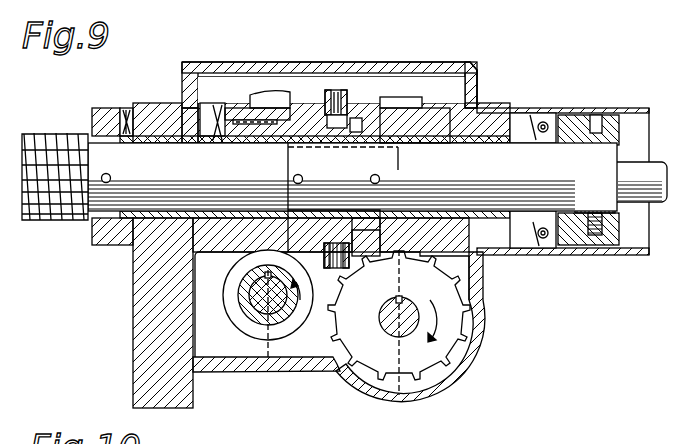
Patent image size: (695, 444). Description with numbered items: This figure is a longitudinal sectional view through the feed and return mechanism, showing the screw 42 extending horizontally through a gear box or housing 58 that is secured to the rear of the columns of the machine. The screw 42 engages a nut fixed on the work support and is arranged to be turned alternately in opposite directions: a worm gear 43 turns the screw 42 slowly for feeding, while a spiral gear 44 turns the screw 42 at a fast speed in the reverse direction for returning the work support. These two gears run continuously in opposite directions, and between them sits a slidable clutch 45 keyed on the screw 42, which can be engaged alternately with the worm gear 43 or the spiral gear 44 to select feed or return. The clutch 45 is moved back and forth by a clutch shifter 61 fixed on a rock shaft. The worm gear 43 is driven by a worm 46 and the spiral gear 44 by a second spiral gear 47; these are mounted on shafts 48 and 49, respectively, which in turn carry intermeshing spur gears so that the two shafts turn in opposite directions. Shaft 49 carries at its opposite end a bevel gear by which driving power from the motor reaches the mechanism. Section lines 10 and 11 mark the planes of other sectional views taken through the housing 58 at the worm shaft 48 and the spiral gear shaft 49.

The section line 10- 10 is at (303, 150).
The section line 11- 11 is at (400, 150).
The screw 42 is at (48, 220).
The worm gear 43 is at (270, 100).
The spiral gear 44 is at (410, 103).
The slidable clutch 45 is at (355, 122).
The worm 46 is at (250, 327).
The spiral gear 47 is at (460, 327).
The shaft 48 is at (277, 300).
The shaft 49 is at (407, 307).
The gear box or housing 58 is at (483, 100).
The clutch shifter 61 is at (330, 92).